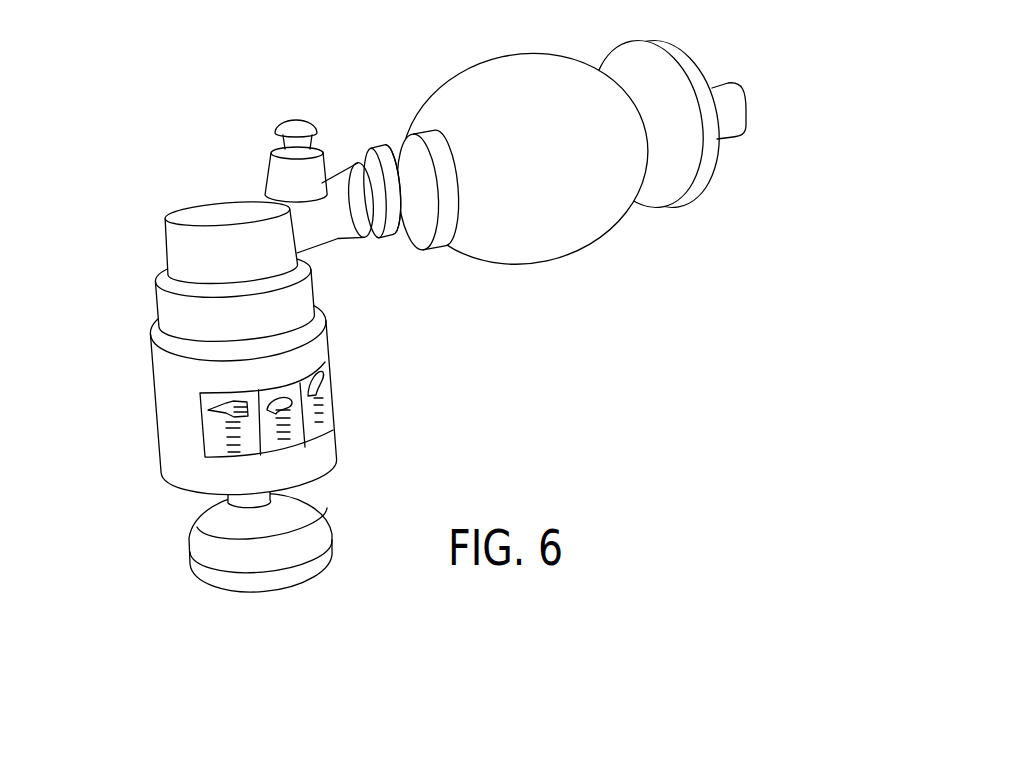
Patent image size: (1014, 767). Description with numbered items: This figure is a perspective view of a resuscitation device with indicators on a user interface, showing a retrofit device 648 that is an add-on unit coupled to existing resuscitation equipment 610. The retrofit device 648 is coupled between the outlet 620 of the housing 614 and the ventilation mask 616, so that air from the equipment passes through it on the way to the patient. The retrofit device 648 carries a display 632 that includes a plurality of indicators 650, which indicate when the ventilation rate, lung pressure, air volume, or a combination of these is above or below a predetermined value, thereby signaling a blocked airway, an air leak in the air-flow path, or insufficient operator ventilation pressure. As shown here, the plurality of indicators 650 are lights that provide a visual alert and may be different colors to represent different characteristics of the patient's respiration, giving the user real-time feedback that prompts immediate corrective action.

The existing resuscitation equipment 610 is at (167, 53).
The housing 614 is at (157, 298).
The ventilation mask 616 is at (193, 523).
The outlet 620 is at (326, 319).
The display 632 is at (352, 389).
The retrofit device 648 is at (153, 404).
The plurality of indicators 650 is at (253, 440).